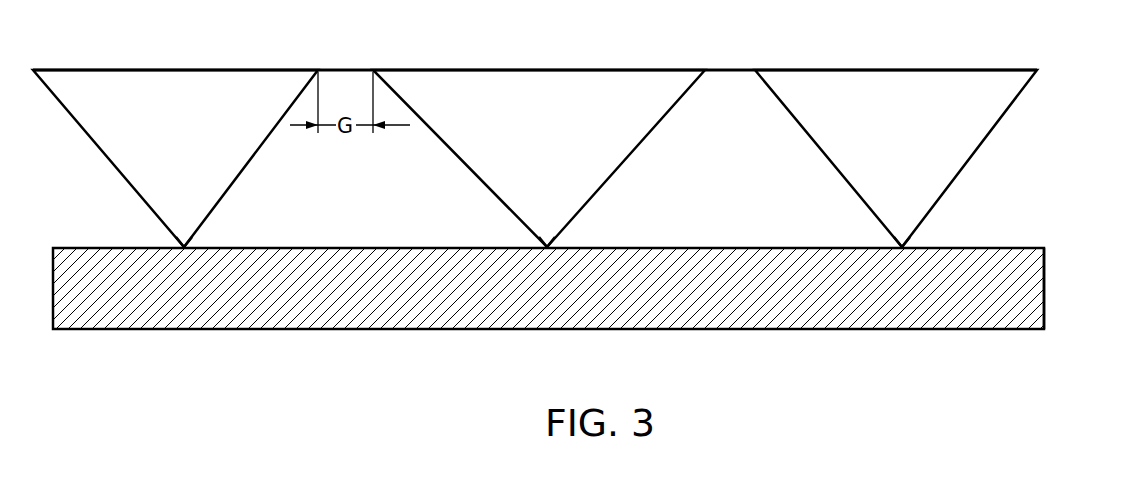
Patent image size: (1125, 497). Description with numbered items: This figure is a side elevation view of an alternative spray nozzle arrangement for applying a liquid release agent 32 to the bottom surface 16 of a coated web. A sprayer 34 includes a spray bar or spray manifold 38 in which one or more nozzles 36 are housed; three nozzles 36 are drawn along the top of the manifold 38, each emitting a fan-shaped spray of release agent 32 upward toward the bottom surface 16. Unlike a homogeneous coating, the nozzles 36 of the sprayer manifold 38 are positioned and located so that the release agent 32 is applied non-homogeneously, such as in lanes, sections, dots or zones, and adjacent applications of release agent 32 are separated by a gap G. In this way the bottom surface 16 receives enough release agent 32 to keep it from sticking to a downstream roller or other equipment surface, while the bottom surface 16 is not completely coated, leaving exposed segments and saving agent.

The bottom surface 16 is at (866, 70).
The liquid release agent 32 is at (195, 146).
The sprayer 34 is at (790, 330).
The nozzles 36 is at (185, 246).
The spray manifold 38 is at (1044, 298).